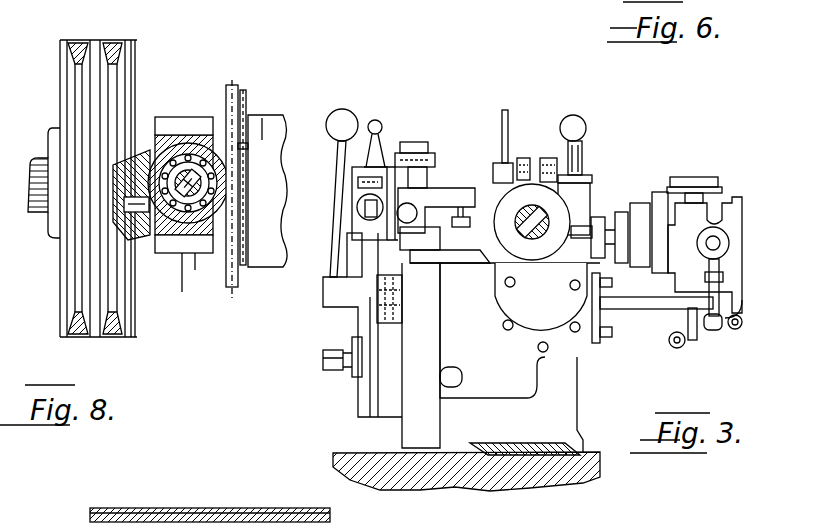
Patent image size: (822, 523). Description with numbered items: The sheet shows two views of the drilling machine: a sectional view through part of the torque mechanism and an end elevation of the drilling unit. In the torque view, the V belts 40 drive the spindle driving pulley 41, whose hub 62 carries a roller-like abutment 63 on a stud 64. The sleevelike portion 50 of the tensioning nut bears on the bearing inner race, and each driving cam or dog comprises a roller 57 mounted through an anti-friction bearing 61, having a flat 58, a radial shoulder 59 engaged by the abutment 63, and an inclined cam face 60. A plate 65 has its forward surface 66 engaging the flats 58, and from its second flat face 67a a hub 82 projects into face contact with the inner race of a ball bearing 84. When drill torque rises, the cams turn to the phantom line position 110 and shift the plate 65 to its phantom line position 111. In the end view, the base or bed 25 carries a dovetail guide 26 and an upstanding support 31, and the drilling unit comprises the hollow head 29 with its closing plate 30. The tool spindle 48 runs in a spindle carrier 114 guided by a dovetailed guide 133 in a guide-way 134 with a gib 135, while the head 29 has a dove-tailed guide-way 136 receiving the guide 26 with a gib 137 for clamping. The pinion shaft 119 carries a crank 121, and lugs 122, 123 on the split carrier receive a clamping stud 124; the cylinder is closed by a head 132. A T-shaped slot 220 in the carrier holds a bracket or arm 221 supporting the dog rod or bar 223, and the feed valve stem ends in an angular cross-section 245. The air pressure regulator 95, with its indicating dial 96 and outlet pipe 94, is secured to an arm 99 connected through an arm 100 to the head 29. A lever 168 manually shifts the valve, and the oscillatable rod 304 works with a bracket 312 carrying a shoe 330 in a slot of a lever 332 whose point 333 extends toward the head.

In FIG. 8, the V belts 40 is at (82, 43).
In FIG. 8, the spindle driving pulley 41 is at (137, 62).
In FIG. 8, the sleevelike portion 50 is at (152, 150).
In FIG. 8, the roller 57 is at (192, 143).
In FIG. 8, the flat 58 is at (204, 268).
In FIG. 8, the radial shoulder 59 is at (205, 130).
In FIG. 8, the cam face 60 is at (172, 253).
In FIG. 8, the anti-friction bearing 61 is at (205, 178).
In FIG. 8, the hub 62 is at (135, 160).
In FIG. 8, the abutment 63 is at (145, 240).
In FIG. 8, the stud 64 is at (120, 235).
In FIG. 8, the plate 65 is at (232, 85).
In FIG. 8, the forward surface 66 is at (233, 288).
In FIG. 8, the second flat face 67a is at (245, 93).
In FIG. 8, the hub 82 is at (272, 140).
In FIG. 8, the ball bearing 84 is at (268, 118).
In FIG. 8, the phantom line position 110 is at (180, 280).
In FIG. 8, the phantom line position 111 is at (244, 268).
In FIG. 3, the base or bed 25 is at (500, 480).
In FIG. 3, the dovetail guide 26 is at (545, 470).
In FIG. 3, the body portion or head 29 is at (572, 400).
In FIG. 3, the closing plate 30 is at (426, 433).
In FIG. 3, the upstanding support 31 is at (85, 518).
In FIG. 3, the tool spindle 48 is at (545, 218).
In FIG. 3, the outlet pipe 94 is at (730, 243).
In FIG. 3, the air pressure regulator 95 is at (770, 144).
In FIG. 3, the indicating dial 96 is at (712, 177).
In FIG. 3, the arm 99 is at (742, 225).
In FIG. 3, the arm 100 is at (641, 300).
In FIG. 3, the spindle carrier 114 is at (575, 235).
In FIG. 3, the shaft 119 is at (590, 178).
In FIG. 3, the crank 121 is at (581, 150).
In FIG. 3, the lug or ear 122 is at (553, 158).
In FIG. 3, the lug or ear 123 is at (527, 158).
In FIG. 3, the clamping stud 124 is at (505, 162).
In FIG. 3, the head 132 is at (560, 355).
In FIG. 3, the dovetailed guide 133 is at (553, 275).
In FIG. 3, the guide-way 134 is at (556, 296).
In FIG. 3, the gib 135 is at (490, 258).
In FIG. 3, the dove-tailed guide-way 136 is at (585, 452).
In FIG. 3, the gib 137 is at (478, 487).
In FIG. 3, the lever 168 is at (347, 250).
In FIG. 3, the T-shaped slot 220 is at (461, 228).
In FIG. 3, the bracket or arm 221 is at (455, 195).
In FIG. 3, the rod or bar 223 is at (410, 205).
In FIG. 3, the end of angular cross-section 245 is at (333, 368).
In FIG. 3, the oscillatable rod 304 is at (352, 205).
In FIG. 3, the bracket 312 is at (347, 262).
In FIG. 3, the shoe 330 is at (424, 142).
In FIG. 3, the lever 332 is at (396, 150).
In FIG. 3, the point 333 is at (432, 150).